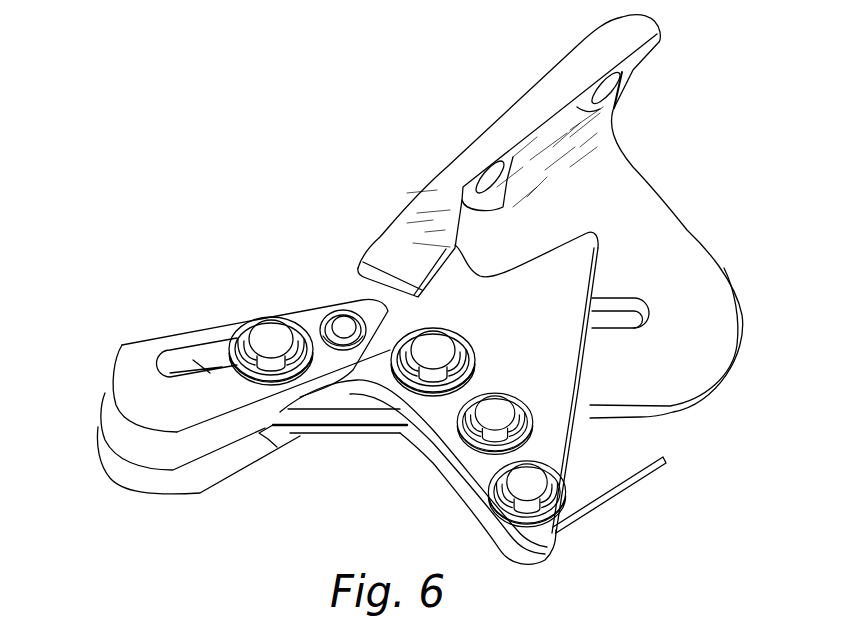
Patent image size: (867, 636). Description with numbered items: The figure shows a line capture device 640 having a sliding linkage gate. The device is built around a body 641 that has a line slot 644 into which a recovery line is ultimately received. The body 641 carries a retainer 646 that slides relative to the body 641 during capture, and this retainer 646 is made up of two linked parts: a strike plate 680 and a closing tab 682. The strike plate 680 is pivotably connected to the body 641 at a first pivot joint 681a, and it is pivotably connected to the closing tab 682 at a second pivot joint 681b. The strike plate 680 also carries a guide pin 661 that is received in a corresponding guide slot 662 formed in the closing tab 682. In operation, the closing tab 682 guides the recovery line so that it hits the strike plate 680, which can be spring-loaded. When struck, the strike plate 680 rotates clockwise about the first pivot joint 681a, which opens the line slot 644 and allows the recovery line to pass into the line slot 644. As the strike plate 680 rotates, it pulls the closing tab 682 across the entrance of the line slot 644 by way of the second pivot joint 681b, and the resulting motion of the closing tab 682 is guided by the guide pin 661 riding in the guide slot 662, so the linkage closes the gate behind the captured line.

The line capture device 640 is at (335, 220).
The body 641 is at (677, 233).
The strike plate 680 is at (567, 281).
The line slot 644 is at (627, 318).
The retainer 646 is at (347, 442).
The closing tab 682 is at (138, 357).
The guide slot 662 is at (193, 370).
The guide pin 661 is at (288, 350).
The first pivot joint 681a is at (445, 375).
The second pivot joint 681b is at (343, 320).